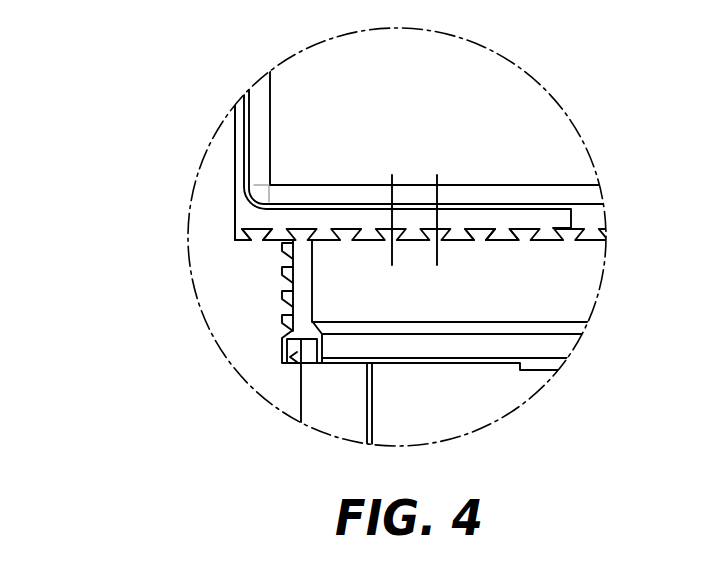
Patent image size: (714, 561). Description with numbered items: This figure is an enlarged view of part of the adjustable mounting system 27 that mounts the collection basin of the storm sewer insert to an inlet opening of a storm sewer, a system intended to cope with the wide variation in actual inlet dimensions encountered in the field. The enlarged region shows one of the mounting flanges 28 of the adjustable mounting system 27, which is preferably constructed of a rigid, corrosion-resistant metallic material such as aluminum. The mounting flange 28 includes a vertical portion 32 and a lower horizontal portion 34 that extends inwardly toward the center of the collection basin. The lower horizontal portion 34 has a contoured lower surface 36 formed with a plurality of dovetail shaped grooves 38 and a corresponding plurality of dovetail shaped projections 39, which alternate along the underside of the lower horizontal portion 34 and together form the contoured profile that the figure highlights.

The adjustable mounting system 27 is at (123, 212).
The mounting flange 28 is at (206, 230).
The vertical portion 32 is at (235, 143).
The lower horizontal portion 34 is at (350, 212).
The contoured lower surface 36 is at (258, 251).
The dovetail shaped grooves 38 is at (482, 240).
The dovetail shaped projections 39 is at (502, 233).